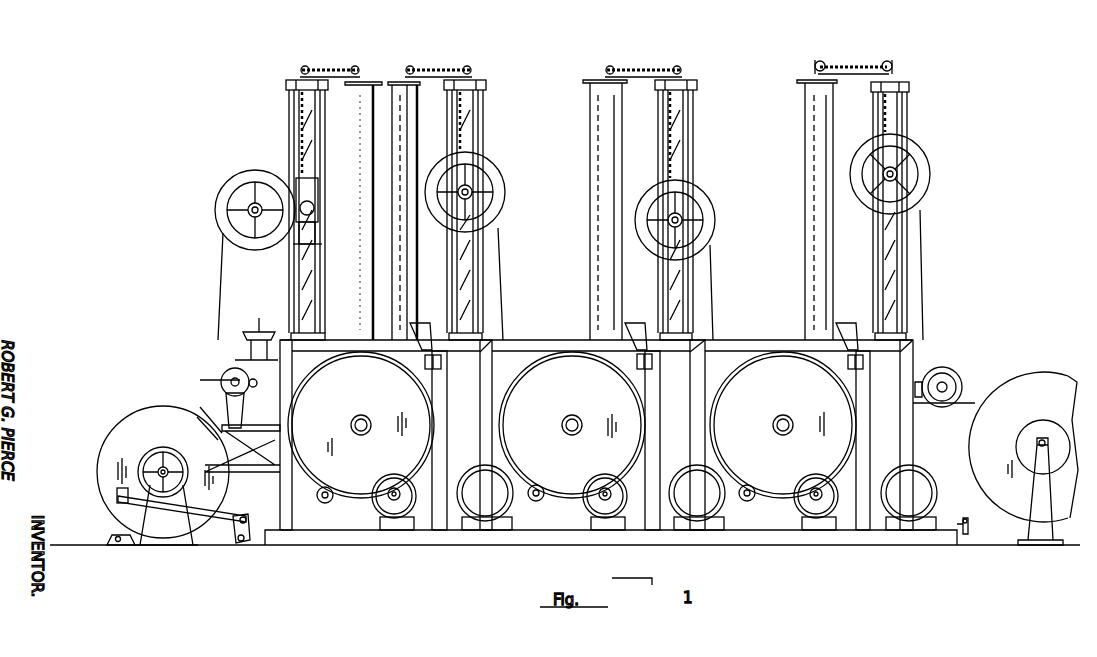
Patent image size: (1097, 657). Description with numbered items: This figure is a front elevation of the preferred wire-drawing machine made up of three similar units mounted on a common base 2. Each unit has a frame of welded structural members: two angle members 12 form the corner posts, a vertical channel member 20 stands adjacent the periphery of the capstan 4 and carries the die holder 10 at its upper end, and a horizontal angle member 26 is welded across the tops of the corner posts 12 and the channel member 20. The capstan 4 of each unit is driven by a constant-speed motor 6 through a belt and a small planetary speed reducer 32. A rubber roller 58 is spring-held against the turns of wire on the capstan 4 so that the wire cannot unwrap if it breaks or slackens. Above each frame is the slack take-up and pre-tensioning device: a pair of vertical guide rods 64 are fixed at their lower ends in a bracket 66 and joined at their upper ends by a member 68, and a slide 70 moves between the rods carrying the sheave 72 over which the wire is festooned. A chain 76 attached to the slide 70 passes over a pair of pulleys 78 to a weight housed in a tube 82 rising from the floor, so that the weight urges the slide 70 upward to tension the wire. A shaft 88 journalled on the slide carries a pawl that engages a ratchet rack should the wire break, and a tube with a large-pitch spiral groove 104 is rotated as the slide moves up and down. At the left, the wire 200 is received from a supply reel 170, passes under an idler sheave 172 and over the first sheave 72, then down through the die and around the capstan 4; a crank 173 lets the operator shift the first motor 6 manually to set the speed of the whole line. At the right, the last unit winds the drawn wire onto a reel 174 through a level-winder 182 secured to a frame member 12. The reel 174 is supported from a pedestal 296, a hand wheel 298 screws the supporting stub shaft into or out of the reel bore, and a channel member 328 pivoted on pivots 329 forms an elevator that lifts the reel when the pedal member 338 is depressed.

The common base 2 is at (647, 532).
The capstan 4 is at (572, 425).
The motor 6 is at (477, 478).
The die holder 10 is at (441, 361).
The angle members 12 is at (285, 518).
The vertical channel member 20 is at (440, 404).
The horizontal angle member 26 is at (543, 347).
The planetary speed reducer 32 is at (383, 504).
The rubber roller 58 is at (325, 503).
The guide rods 64 is at (478, 273).
The bracket 66 is at (313, 337).
The connecting member 68 is at (287, 84).
The slide 70 is at (475, 171).
The sheave 72 is at (250, 175).
The chain 76 is at (330, 67).
The pulleys 78 is at (819, 61).
The tube 82 is at (602, 110).
The shaft 88 is at (400, 97).
The spiral groove 104 is at (302, 275).
The reel 170 is at (1040, 400).
The idler sheave 172 is at (943, 377).
The crank 173 is at (968, 526).
The reel 174 is at (127, 428).
The level-winder 182 is at (235, 397).
The wire 200 is at (977, 405).
The pedestal 296 is at (163, 536).
The hand wheel 298 is at (155, 448).
The channel member 328 is at (210, 538).
The pivots 329 is at (118, 542).
The pedal member 338 is at (115, 498).